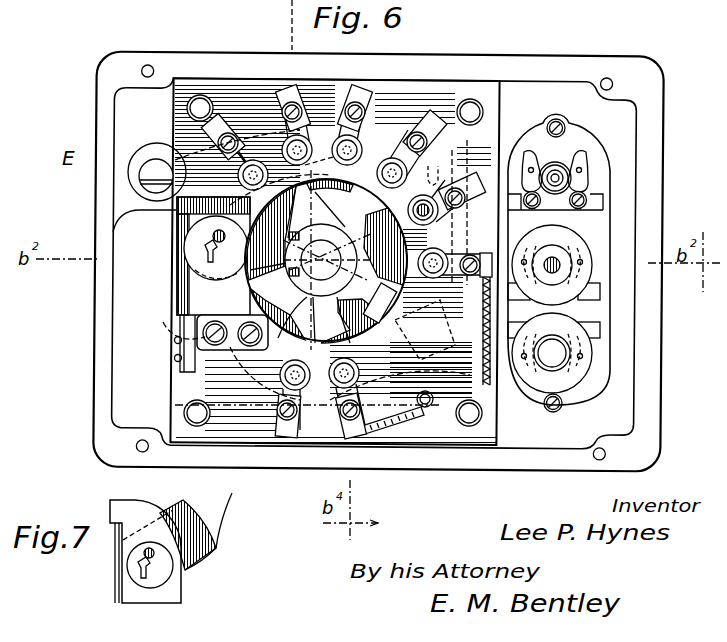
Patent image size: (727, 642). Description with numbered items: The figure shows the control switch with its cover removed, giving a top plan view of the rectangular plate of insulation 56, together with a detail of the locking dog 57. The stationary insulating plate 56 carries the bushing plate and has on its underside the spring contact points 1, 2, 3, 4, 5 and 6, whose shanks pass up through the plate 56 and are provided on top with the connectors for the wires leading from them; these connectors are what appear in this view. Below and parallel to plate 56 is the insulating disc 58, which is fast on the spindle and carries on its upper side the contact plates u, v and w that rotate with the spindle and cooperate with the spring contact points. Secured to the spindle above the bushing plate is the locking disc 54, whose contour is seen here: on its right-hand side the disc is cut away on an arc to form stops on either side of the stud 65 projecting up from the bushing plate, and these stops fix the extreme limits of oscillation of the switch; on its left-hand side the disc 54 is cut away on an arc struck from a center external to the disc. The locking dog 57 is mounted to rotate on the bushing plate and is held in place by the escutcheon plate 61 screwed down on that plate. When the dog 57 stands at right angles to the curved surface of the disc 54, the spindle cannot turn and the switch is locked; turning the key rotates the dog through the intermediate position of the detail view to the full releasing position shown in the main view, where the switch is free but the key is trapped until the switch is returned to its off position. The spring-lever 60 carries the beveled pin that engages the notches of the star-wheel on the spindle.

In FIG. 6, the spring contact point 1 is at (239, 151).
In FIG. 6, the spring contact point 2 is at (322, 166).
In FIG. 6, the spring contact point 3 is at (301, 125).
In FIG. 6, the spring contact point 4 is at (372, 148).
In FIG. 6, the spring contact point 5 is at (456, 220).
In FIG. 6, the spring contact point 6 is at (431, 285).
In FIG. 6, the locking disc 54 is at (326, 260).
In FIG. 7, the locking disc 54 is at (235, 496).
In FIG. 6, the rectangular plate of insulation 56 is at (500, 122).
In FIG. 6, the locking dog 57 is at (177, 208).
In FIG. 7, the locking dog 57 is at (177, 510).
In FIG. 6, the insulating disc 58 is at (404, 343).
In FIG. 6, the spring-lever 60 is at (143, 157).
In FIG. 6, the escutcheon plate 61 is at (216, 284).
In FIG. 7, the escutcheon plate 61 is at (186, 588).
In FIG. 6, the stud 65 is at (380, 303).
In FIG. 6, the contact plate u is at (196, 312).
In FIG. 6, the contact plate v is at (275, 399).
In FIG. 6, the contact plate w is at (442, 331).